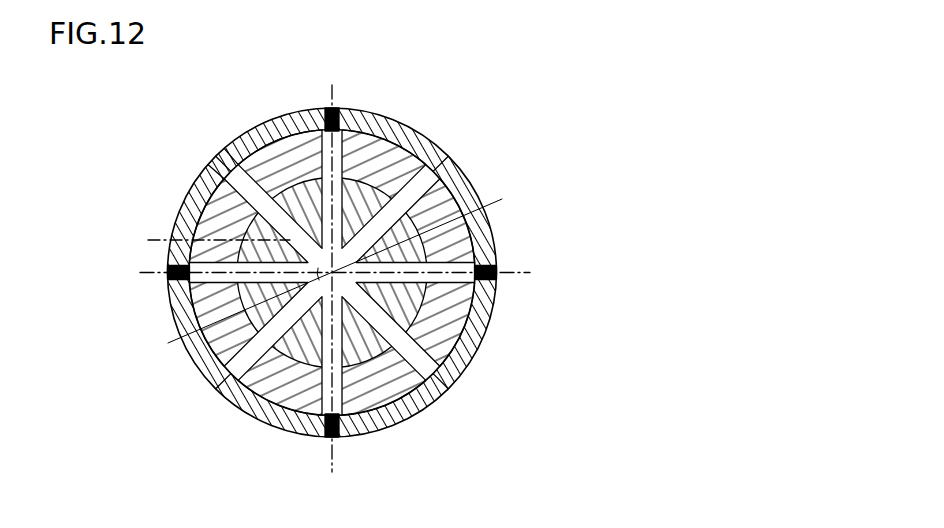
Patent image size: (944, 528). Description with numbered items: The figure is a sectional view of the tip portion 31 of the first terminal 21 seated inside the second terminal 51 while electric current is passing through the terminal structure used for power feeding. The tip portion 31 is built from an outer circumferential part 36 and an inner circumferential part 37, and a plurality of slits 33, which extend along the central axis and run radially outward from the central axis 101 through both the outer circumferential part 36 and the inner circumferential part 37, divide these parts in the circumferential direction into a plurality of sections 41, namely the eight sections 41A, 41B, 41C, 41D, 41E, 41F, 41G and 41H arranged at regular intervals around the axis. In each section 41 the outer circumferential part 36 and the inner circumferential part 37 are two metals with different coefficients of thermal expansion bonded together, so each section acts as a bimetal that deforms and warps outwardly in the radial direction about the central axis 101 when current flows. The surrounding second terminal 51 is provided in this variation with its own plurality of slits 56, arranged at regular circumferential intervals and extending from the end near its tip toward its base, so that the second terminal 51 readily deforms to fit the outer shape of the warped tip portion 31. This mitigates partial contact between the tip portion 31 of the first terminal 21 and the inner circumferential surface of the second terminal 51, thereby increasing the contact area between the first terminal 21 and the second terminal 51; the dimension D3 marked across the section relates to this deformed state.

The first terminal 21 is at (417, 400).
The tip portion 31 is at (411, 152).
The slits 33 is at (228, 402).
The outer circumferential part 36 is at (463, 305).
The inner circumferential part 37 is at (477, 363).
The sections 41 is at (331, 273).
The section 41A is at (374, 137).
The section 41B is at (445, 250).
The section 41C is at (470, 327).
The section 41D is at (390, 430).
The section 41E is at (283, 416).
The section 41F is at (200, 305).
The section 41G is at (203, 208).
The section 41H is at (268, 134).
The second terminal 51 is at (238, 127).
The slits 56 is at (226, 162).
The central axis 101 is at (200, 241).
The diameter line D3 is at (455, 222).